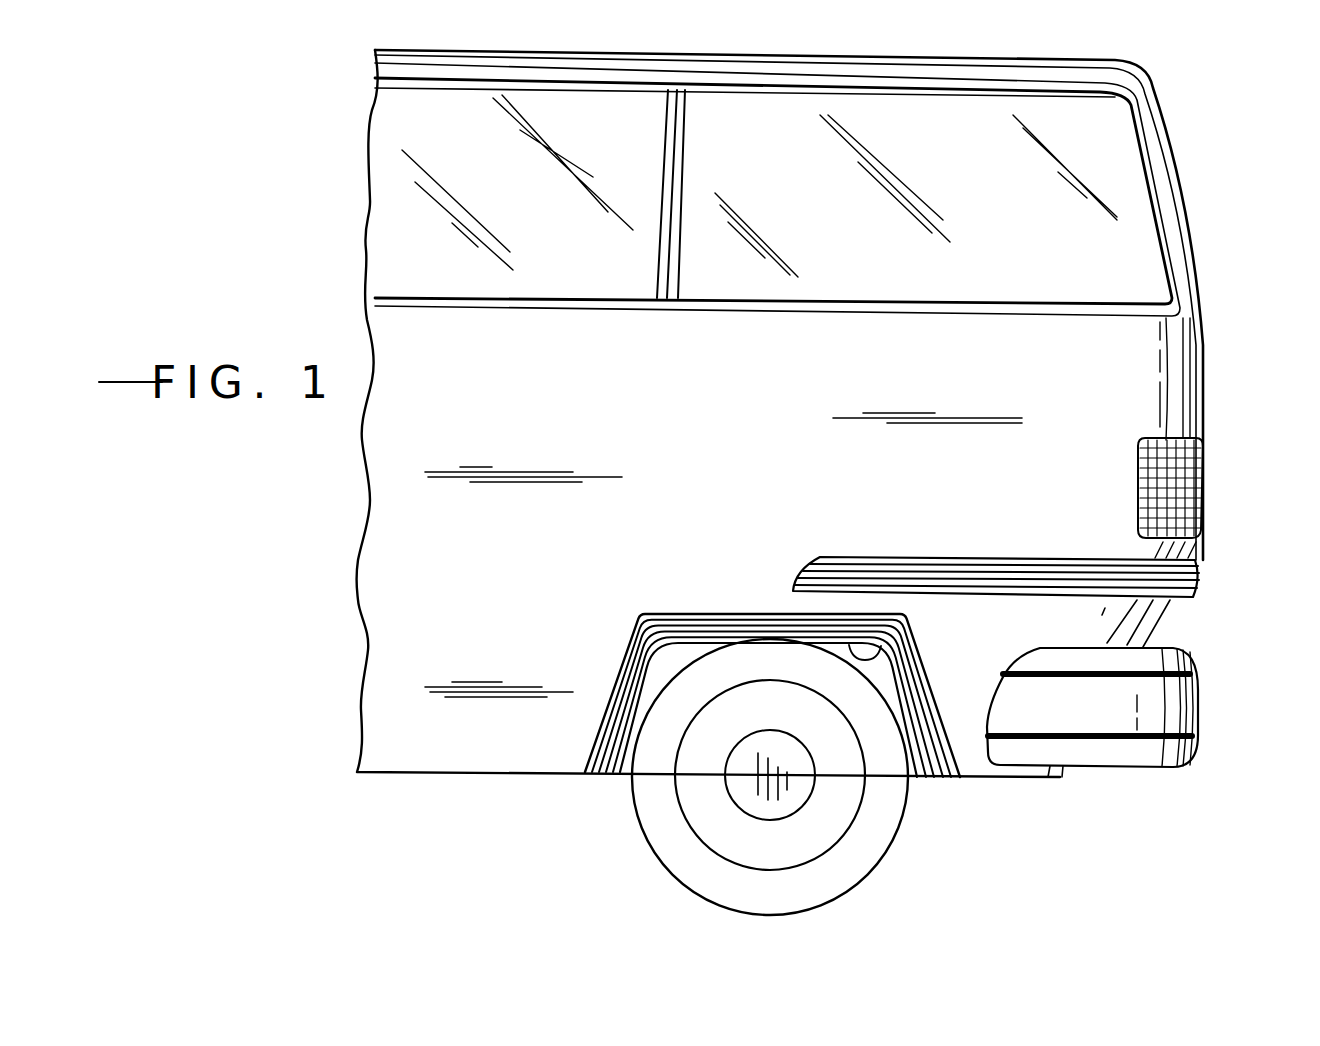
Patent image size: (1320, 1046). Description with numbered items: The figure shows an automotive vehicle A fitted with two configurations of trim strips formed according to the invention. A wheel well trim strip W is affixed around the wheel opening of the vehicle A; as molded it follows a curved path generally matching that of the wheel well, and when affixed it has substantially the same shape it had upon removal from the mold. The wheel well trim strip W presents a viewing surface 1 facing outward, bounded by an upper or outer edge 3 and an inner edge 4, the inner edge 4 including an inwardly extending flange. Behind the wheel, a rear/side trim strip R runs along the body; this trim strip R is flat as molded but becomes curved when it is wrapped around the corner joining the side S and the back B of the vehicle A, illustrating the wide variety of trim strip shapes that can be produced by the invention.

The automotive vehicle A is at (346, 601).
The side S is at (702, 412).
The back B is at (1208, 405).
The rear/side trim strip R is at (955, 558).
The wheel well trim strip W is at (640, 616).
The viewing surface 1 is at (772, 652).
The upper or outer edge 3 is at (758, 610).
The inner edge 4 is at (900, 630).